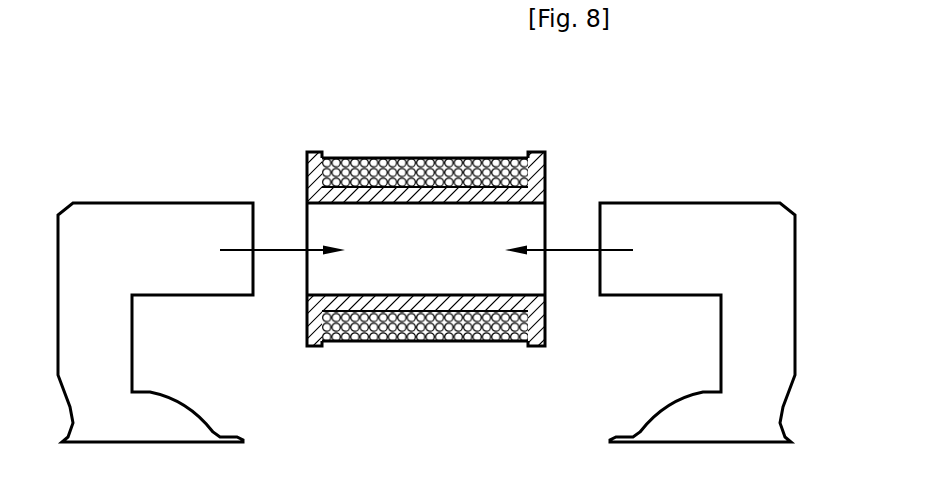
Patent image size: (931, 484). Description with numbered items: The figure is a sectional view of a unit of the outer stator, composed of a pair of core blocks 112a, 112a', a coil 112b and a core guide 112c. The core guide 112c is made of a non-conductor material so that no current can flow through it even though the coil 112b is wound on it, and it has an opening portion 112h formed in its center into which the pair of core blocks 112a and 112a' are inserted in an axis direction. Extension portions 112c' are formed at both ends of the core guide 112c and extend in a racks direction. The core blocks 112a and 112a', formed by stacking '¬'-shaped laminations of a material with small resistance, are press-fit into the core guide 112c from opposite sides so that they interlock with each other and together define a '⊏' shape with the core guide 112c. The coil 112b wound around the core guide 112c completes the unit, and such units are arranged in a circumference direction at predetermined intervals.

The core block 112a is at (697, 247).
The core block 112a' is at (155, 247).
The coil 112b is at (402, 158).
The core guide 112c is at (422, 199).
The extension portion 112c' is at (422, 199).
The opening portion 112h is at (340, 220).